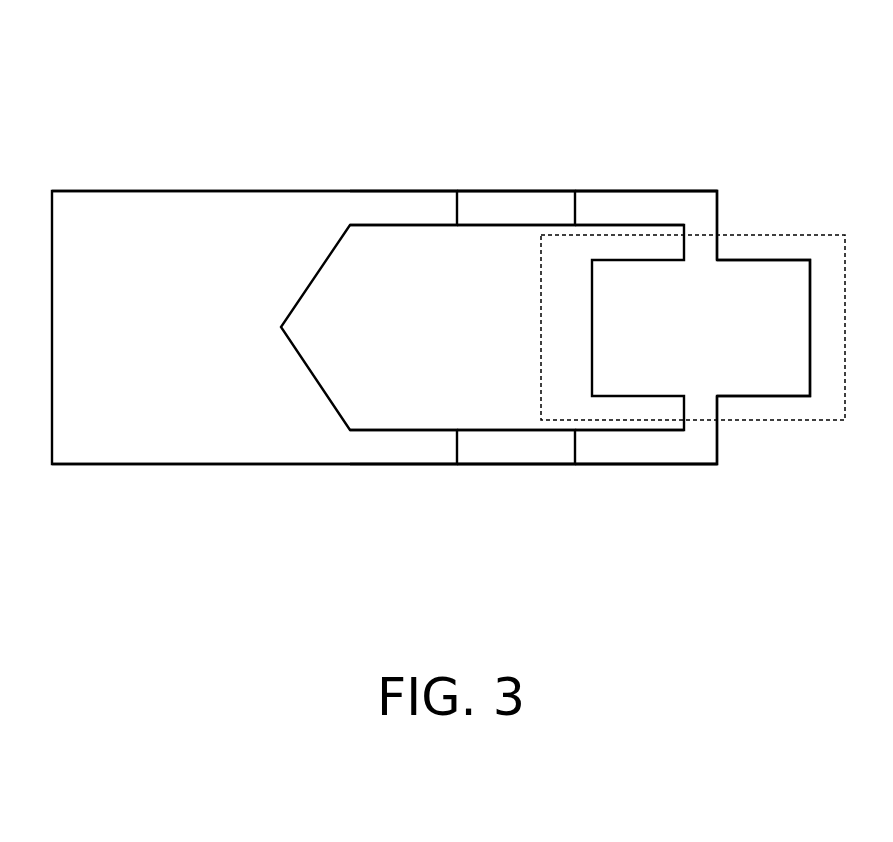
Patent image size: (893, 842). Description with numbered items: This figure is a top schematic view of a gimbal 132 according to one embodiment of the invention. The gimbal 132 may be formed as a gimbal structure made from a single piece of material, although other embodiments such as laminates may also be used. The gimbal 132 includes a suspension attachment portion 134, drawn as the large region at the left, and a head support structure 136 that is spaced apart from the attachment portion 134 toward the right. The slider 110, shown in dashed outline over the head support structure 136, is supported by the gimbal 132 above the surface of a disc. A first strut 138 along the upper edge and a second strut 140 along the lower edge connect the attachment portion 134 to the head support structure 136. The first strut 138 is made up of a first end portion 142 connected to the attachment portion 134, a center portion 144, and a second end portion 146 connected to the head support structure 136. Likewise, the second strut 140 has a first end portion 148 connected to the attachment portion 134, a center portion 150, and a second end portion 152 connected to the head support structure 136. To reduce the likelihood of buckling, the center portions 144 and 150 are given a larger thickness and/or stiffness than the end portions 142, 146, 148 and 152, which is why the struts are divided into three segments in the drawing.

The slider 110 is at (788, 233).
The gimbal 132 is at (211, 190).
The suspension attachment portion 134 is at (179, 330).
The head support structure 136 is at (753, 355).
The first strut 138 is at (441, 190).
The second strut 140 is at (440, 465).
The first end portion 142 is at (399, 212).
The center portion 144 is at (517, 203).
The second end portion 146 is at (627, 203).
The first end portion 148 is at (417, 455).
The center portion 150 is at (518, 450).
The second end portion 152 is at (653, 455).